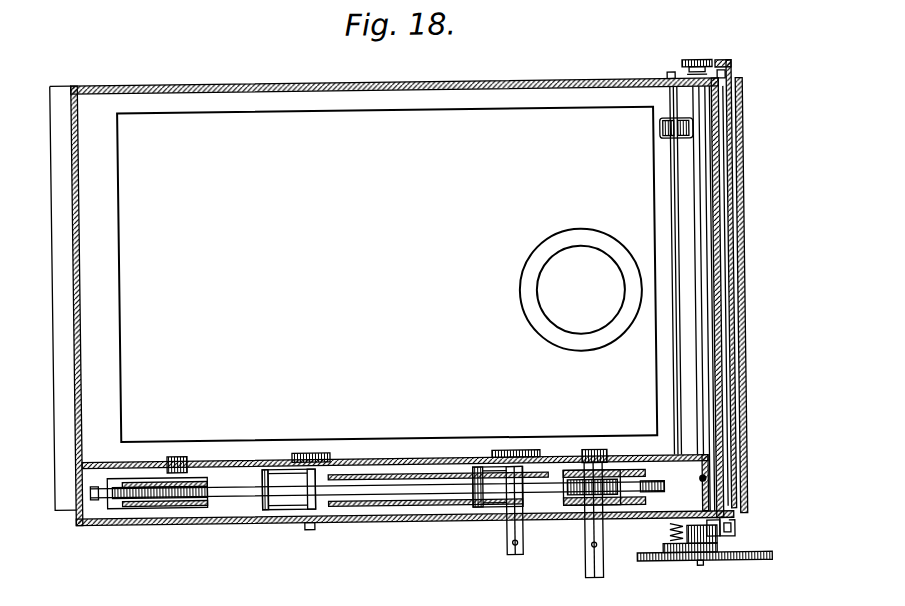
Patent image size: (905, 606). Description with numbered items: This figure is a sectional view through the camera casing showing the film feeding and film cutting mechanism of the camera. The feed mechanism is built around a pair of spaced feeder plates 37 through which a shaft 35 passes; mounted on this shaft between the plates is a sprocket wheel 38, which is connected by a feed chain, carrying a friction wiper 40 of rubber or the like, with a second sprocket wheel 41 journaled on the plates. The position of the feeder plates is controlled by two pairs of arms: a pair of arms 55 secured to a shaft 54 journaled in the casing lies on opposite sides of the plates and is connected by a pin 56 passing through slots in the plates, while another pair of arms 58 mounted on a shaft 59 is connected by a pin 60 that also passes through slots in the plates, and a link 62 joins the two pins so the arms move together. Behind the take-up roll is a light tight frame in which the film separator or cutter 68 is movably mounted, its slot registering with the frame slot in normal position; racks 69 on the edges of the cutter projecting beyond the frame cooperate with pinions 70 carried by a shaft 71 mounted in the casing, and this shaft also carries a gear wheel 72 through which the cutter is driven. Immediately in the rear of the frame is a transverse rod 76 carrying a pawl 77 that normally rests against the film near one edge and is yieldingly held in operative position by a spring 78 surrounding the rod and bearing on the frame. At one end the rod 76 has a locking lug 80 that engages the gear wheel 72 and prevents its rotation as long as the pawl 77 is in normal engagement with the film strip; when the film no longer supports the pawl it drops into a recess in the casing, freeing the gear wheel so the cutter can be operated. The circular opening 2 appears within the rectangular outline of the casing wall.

The lens opening 2 is at (555, 276).
The shaft 35 is at (592, 582).
The feeder plates 37 is at (408, 458).
The sprocket wheel 38 is at (638, 500).
The friction wiper 40 is at (88, 494).
The sprocket wheel 41 is at (139, 494).
The shaft 54 is at (514, 561).
The arms 55 is at (488, 460).
The pin 56 is at (476, 468).
The arms 58 is at (292, 452).
The shaft 59 is at (307, 526).
The pin 60 is at (260, 520).
The link 62 is at (368, 506).
The film separator or cutter 68 is at (736, 68).
The racks 69 is at (724, 64).
The pinions 70 is at (692, 63).
The shaft 71 is at (701, 300).
The gear wheel 72 is at (762, 565).
The transverse rod 76 is at (673, 188).
The pawl 77 is at (664, 136).
The spring 78 is at (668, 466).
The locking lug 80 is at (695, 568).